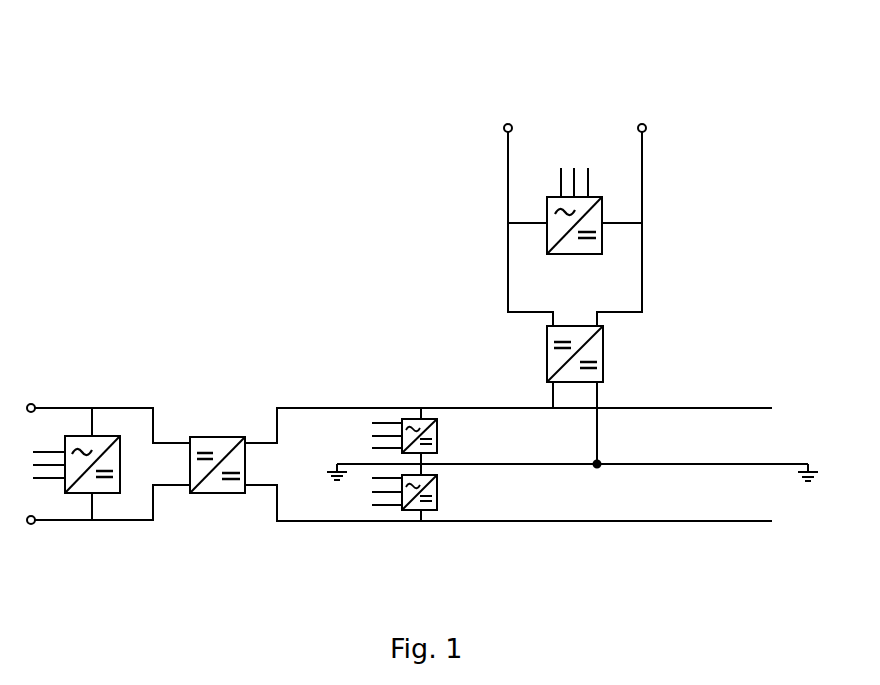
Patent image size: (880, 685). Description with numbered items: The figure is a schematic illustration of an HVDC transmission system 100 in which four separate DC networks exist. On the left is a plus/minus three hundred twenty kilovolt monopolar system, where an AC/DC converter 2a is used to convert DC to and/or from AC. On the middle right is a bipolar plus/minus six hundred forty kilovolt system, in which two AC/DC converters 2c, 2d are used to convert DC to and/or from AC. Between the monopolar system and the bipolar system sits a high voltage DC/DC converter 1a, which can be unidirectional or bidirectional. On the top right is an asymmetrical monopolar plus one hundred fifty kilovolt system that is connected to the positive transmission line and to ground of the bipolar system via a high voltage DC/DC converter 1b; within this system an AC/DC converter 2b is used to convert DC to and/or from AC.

The HVDC transmission system 100 is at (765, 102).
The high voltage DC/DC converter 1a is at (215, 437).
The high voltage DC/DC converter 1b is at (604, 345).
The AC/DC converter 2a is at (122, 463).
The AC/DC converter 2b is at (603, 235).
The AC/DC converter 2c is at (438, 436).
The AC/DC converter 2d is at (438, 494).